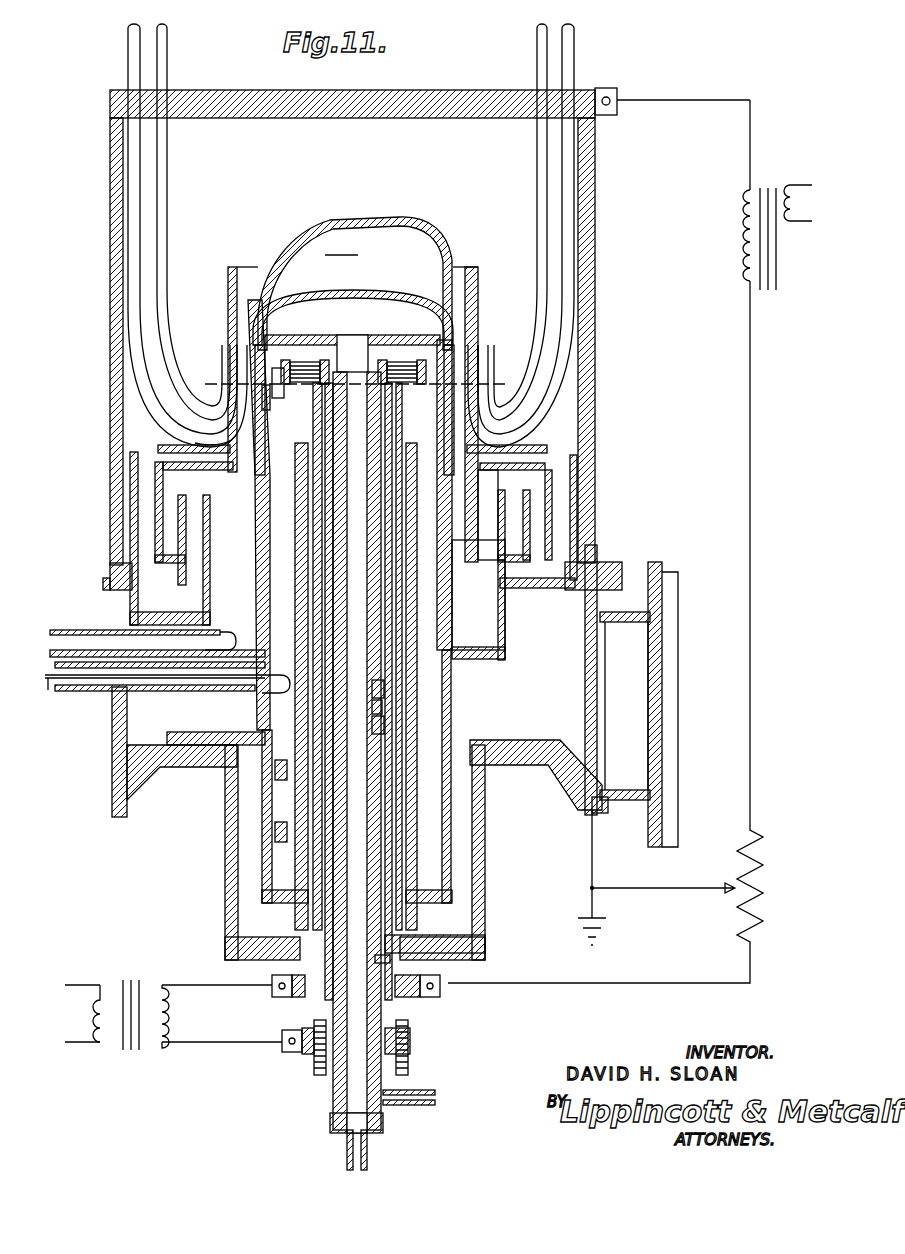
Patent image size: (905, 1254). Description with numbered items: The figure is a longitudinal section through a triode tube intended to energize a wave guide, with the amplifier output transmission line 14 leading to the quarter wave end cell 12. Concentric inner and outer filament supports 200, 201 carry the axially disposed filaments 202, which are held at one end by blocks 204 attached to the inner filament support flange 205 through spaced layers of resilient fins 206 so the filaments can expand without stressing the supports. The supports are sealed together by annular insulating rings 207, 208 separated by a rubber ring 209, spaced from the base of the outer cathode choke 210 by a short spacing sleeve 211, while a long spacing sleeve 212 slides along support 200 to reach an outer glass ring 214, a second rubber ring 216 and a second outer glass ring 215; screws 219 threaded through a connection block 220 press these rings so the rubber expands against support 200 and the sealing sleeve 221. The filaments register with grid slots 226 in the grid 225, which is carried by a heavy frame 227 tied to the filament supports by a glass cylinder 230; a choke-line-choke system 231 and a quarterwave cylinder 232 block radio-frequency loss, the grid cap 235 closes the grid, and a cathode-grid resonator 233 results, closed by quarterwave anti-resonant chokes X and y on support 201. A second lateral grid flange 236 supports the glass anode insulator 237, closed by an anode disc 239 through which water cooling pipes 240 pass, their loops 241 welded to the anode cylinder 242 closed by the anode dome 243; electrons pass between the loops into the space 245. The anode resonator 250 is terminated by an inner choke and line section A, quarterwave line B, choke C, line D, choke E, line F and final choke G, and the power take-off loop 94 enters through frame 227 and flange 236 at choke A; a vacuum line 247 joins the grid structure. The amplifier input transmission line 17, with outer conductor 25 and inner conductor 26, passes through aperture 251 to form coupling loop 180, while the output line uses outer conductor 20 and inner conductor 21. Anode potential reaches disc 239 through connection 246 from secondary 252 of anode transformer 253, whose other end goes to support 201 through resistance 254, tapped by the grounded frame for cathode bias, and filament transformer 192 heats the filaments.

The anode disc 239 is at (292, 79).
The connection 246 is at (607, 88).
The glass anode insulator 237 is at (594, 403).
The water cooling pipes 240 is at (164, 186).
The pipe loops 241 is at (235, 412).
The anode cylinder 242 is at (226, 276).
The anode dome 243 is at (302, 222).
The anode resonator 250 is at (341, 245).
The grid cap 235 is at (400, 284).
The resilient fins 206 is at (339, 355).
The blocks 204 is at (296, 360).
The inner filament support flange 205 is at (400, 360).
The filaments 202 is at (283, 379).
The quarter wave end cell 12 is at (203, 372).
The space 245 is at (522, 384).
The grid slots 226 is at (262, 395).
The grid 225 is at (258, 578).
The final choke G is at (518, 458).
The annular quarterwave line B is at (488, 515).
The choke C is at (506, 525).
The quarterwave line D is at (519, 526).
The line F is at (561, 517).
The quarterwave choke E is at (537, 575).
The inner quarterwave choke and line section A is at (474, 583).
The outer cathode choke 210 is at (398, 613).
The short spacing sleeve 211 is at (402, 657).
The quarterwave cylinder 232 is at (300, 440).
The choke-line-choke system 231 is at (306, 566).
The aperture 251 is at (292, 670).
The long spacing sleeve 212 is at (388, 849).
The sealing sleeve 221 is at (394, 908).
The inner filament support 200 is at (333, 1081).
The annular insulating ring 207 is at (387, 690).
The rubber ring 209 is at (383, 706).
The annular insulating ring 208 is at (378, 721).
The second lateral grid flange 236 is at (512, 638).
The vacuum line 247 is at (662, 595).
The heavy frame 227 is at (565, 759).
The cathode-grid resonator 233 is at (263, 702).
The amplifier output transmission line 14 is at (50, 630).
The power take-off loop 94 is at (230, 631).
The inner conductor 21 is at (62, 650).
The outer conductor 20 is at (75, 662).
The inner conductor 26 is at (57, 685).
The outer conductor 25 is at (82, 691).
The amplifier input transmission line 17 is at (46, 680).
The coupling loop 180 is at (265, 694).
The quarterwave anti-resonant choke X is at (282, 769).
The quarterwave anti-resonant choke y is at (290, 831).
The glass cylinder 230 is at (225, 867).
The outer filament support 201 is at (245, 913).
The outer glass ring 214 is at (383, 941).
The second rubber ring 216 is at (380, 962).
The second outer glass ring 215 is at (433, 999).
The screws 219 is at (305, 1024).
The connection block 220 is at (410, 1042).
The filament transformer 192 is at (150, 987).
The secondary 252 is at (743, 242).
The anode transformer 253 is at (765, 185).
The resistance 254 is at (752, 837).